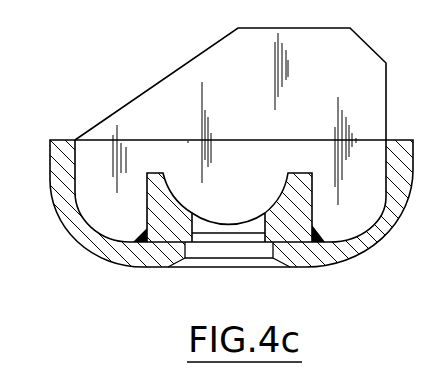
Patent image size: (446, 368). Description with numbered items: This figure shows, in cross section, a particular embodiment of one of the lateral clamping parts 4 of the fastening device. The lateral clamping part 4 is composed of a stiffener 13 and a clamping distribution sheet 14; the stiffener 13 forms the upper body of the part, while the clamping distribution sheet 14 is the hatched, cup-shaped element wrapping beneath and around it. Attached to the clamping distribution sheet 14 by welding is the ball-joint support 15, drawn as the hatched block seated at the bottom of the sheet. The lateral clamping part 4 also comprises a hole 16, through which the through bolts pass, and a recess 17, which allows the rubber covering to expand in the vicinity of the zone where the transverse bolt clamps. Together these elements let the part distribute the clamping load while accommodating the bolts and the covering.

The lateral clamping part 4 is at (223, 184).
The stiffener 13 is at (338, 65).
The clamping distribution sheet 14 is at (375, 233).
The ball-joint support 15 is at (157, 202).
The hole 16 is at (246, 250).
The recess 17 is at (200, 262).